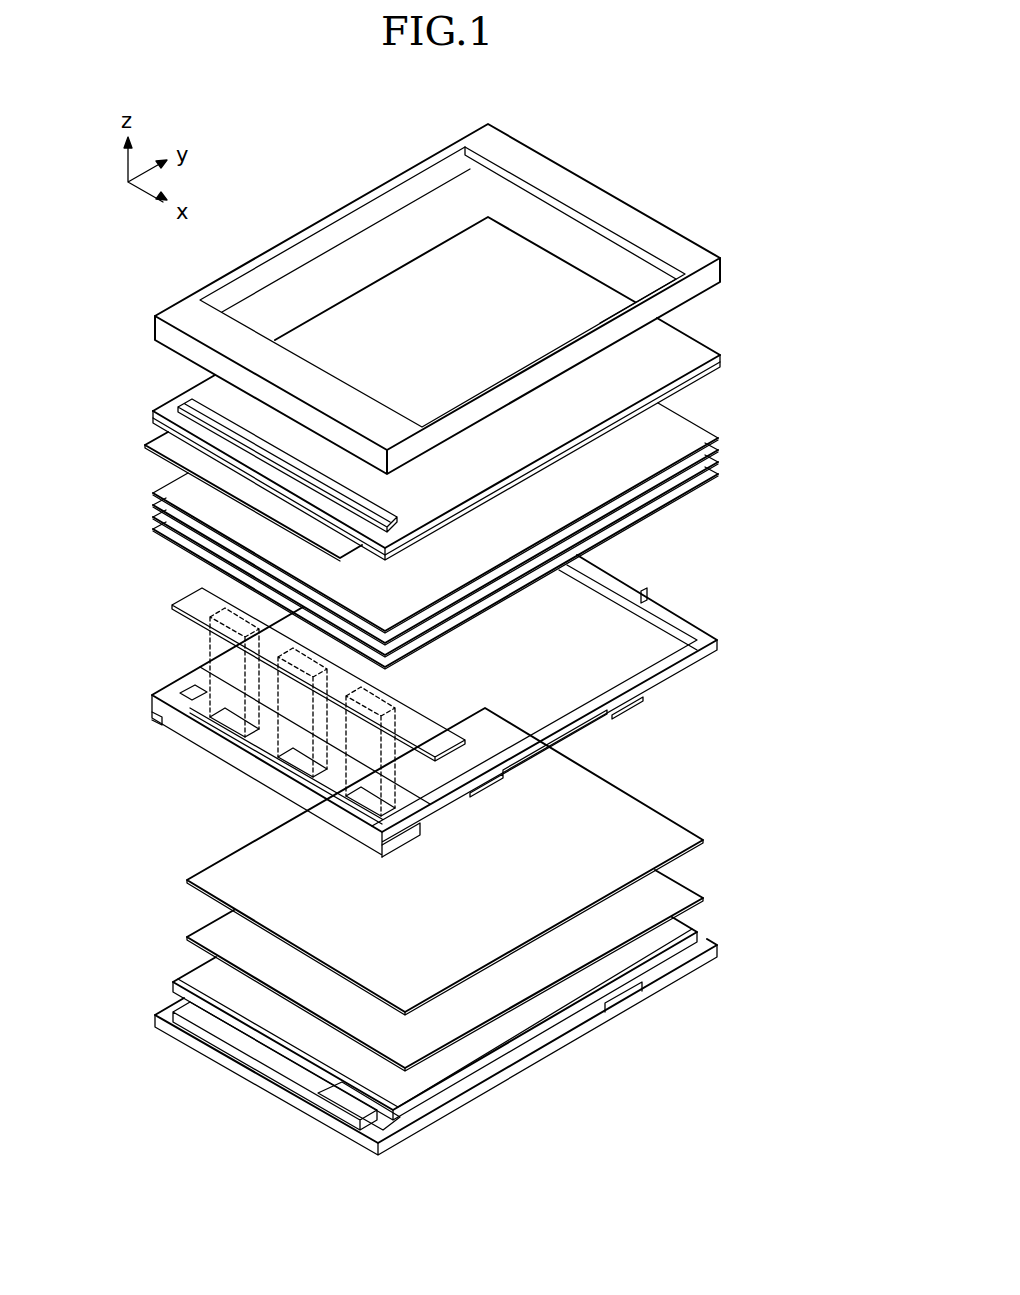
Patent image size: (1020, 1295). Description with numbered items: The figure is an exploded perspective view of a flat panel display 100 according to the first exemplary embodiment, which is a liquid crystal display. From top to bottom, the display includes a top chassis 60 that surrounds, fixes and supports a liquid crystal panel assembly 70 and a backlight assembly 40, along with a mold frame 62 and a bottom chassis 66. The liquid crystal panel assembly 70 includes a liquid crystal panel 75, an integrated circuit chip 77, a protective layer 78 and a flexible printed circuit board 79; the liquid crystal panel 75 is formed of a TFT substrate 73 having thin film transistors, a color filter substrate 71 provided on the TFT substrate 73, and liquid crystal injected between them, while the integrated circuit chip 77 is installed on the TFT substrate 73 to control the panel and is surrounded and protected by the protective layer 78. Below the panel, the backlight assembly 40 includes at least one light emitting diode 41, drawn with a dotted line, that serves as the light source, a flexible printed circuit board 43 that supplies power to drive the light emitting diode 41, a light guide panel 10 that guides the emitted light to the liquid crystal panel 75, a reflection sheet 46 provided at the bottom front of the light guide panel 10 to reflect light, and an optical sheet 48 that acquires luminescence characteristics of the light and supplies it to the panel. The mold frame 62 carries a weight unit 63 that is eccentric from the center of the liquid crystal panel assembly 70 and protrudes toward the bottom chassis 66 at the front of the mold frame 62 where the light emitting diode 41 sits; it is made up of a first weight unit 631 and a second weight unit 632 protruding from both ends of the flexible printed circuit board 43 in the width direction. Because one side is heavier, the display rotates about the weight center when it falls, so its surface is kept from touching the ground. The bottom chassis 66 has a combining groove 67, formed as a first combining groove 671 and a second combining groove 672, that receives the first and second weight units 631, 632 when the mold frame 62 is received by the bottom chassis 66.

The flat panel display 100 is at (421, 109).
The top chassis 60 is at (602, 203).
The liquid crystal panel 75 is at (416, 297).
The liquid crystal panel assembly 70 is at (150, 423).
The color filter substrate 71 is at (722, 352).
The TFT substrate 73 is at (722, 366).
The integrated circuit chip 77 is at (183, 407).
The protective layer 78 is at (170, 412).
The flexible printed circuit board 79 is at (160, 452).
The backlight assembly 40 is at (783, 441).
The optical sheet 48 is at (728, 438).
The flexible printed circuit board 43 is at (173, 607).
The light emitting diode 41 is at (213, 625).
The mold frame 62 is at (720, 648).
The weight unit 63 is at (175, 870).
The first weight unit 631 is at (382, 855).
The second weight unit 632 is at (157, 722).
The light guide panel 10 is at (665, 830).
The reflection sheet 46 is at (685, 885).
The bottom chassis 66 is at (695, 926).
The combining groove 67 is at (188, 1144).
The first combining groove 671 is at (385, 1147).
The second combining groove 672 is at (163, 1015).